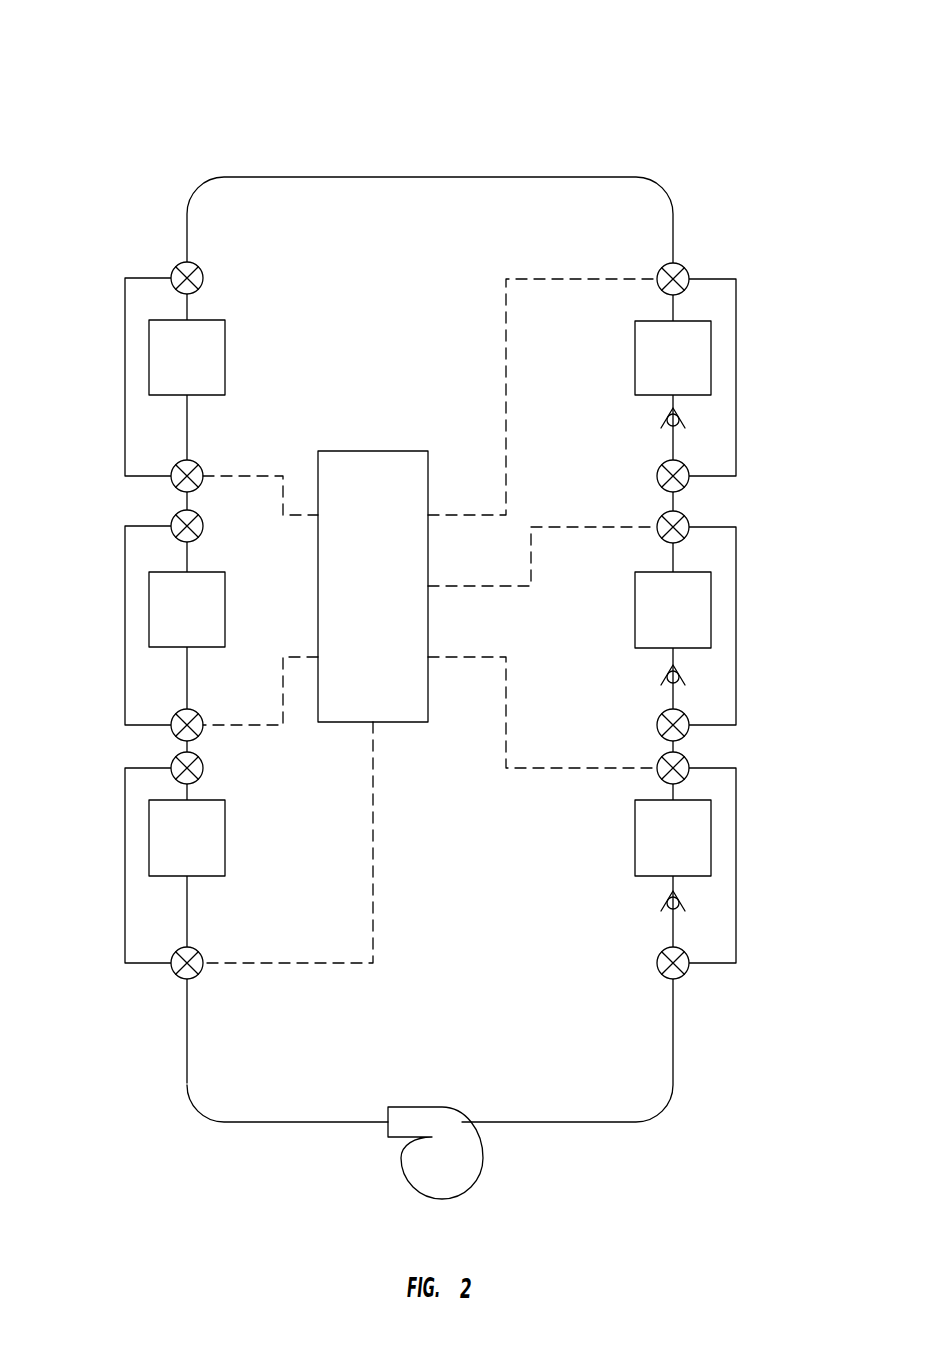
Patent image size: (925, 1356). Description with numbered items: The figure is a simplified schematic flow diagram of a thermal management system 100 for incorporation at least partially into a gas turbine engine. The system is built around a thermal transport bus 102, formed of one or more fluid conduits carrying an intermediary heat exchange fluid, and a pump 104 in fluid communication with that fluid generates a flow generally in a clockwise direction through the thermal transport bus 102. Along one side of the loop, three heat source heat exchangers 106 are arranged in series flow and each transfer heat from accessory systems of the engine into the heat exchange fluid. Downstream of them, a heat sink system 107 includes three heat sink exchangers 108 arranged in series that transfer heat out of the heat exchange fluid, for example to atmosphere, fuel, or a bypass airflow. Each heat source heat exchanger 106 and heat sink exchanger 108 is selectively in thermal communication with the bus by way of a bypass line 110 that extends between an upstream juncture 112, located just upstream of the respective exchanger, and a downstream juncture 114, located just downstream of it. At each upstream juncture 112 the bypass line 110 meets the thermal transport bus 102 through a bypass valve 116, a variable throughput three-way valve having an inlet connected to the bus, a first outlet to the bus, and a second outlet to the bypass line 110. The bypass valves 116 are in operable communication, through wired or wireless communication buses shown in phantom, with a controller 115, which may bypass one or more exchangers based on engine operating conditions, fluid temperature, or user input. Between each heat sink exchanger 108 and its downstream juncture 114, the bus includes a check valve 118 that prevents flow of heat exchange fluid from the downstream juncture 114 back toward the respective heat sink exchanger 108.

The thermal management system 100 is at (75, 94).
The thermal transport bus 102 is at (223, 177).
The pump 104 is at (447, 1107).
The heat source heat exchanger 106 is at (226, 338).
The heat sink system 107 is at (801, 682).
The heat sink exchanger 108 is at (643, 370).
The bypass line 110 is at (125, 371).
The upstream juncture 112 is at (697, 268).
The downstream juncture 114 is at (174, 266).
The controller 115 is at (362, 468).
The bypass valve 116 is at (198, 465).
The check valve 118 is at (660, 424).